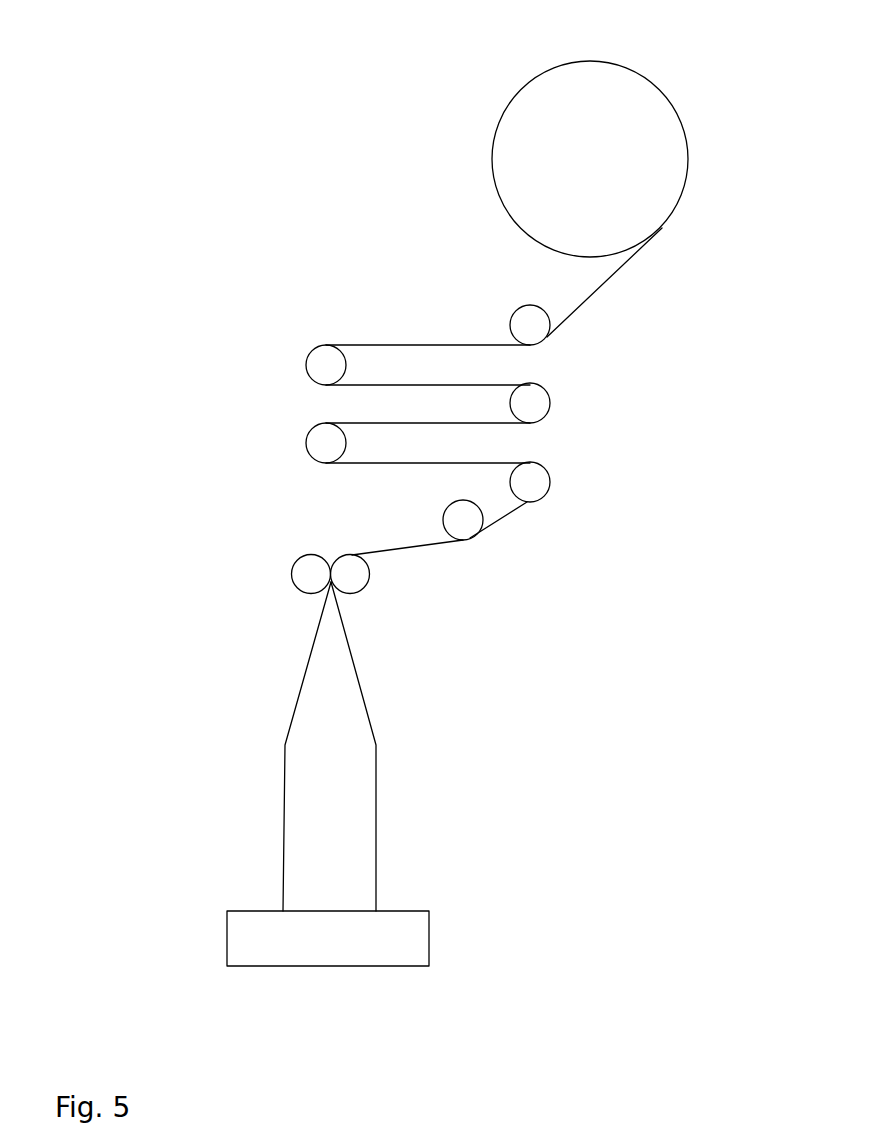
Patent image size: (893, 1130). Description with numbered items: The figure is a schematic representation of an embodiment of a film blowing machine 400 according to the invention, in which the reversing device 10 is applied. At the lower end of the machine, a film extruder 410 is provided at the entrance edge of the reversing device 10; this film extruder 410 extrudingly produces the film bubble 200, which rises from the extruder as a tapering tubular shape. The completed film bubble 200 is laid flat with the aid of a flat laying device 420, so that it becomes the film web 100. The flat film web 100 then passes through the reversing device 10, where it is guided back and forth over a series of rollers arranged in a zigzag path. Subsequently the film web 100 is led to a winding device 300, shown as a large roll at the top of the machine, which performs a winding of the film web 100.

The film blowing machine 400 is at (305, 221).
The winding device 300 is at (540, 78).
The reversing device 10 is at (252, 465).
The film web 100 is at (610, 278).
The flat laying device 420 is at (402, 762).
The film bubble 200 is at (364, 691).
The film extruder 410 is at (428, 945).